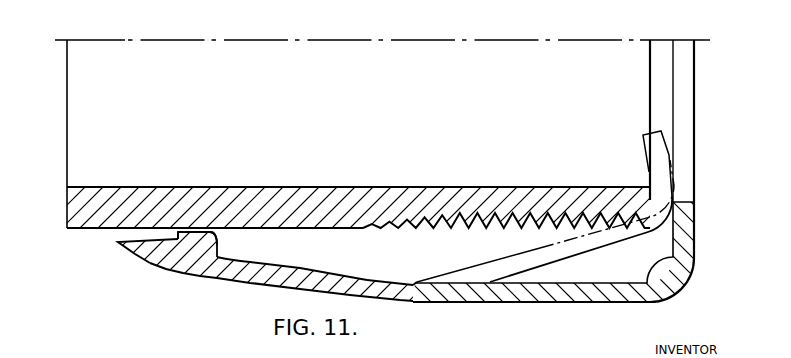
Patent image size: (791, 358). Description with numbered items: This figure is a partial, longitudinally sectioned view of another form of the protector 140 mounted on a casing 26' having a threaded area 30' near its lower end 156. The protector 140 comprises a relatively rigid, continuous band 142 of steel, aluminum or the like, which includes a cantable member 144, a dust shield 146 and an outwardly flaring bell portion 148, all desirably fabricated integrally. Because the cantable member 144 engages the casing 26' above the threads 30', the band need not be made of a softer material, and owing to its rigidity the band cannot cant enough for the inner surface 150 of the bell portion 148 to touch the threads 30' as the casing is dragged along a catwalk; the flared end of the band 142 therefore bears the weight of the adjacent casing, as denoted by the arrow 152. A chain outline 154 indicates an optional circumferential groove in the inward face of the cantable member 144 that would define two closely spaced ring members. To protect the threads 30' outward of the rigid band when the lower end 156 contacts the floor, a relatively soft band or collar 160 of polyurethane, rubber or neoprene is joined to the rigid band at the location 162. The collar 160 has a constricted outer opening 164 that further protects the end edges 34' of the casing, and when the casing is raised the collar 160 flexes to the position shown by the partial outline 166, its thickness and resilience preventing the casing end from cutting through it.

The casing 26' is at (351, 196).
The threaded area 30' is at (506, 233).
The end edges of the casing 34' is at (663, 107).
The protector 140 is at (300, 278).
The continuous band 142 is at (257, 284).
The cantable member 144 is at (203, 236).
The dust shield 146 is at (148, 262).
The bell portion 148 is at (312, 258).
The inner surface of bell portion 150 is at (388, 281).
The arrow 152 is at (418, 301).
The chain outline of groove or recess 154 is at (200, 243).
The lower end of casing 156 is at (645, 192).
The soft band or collar 160 is at (690, 272).
The joint of collar to rigid band 162 is at (413, 284).
The constricted outer opening 164 is at (683, 201).
The partial outline of flexed band 166 is at (597, 250).